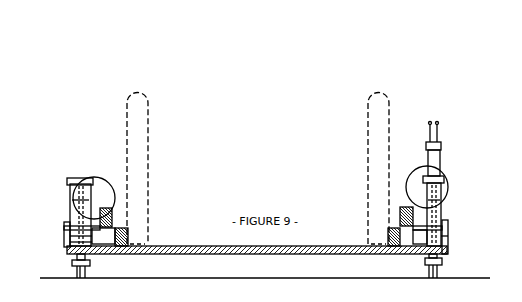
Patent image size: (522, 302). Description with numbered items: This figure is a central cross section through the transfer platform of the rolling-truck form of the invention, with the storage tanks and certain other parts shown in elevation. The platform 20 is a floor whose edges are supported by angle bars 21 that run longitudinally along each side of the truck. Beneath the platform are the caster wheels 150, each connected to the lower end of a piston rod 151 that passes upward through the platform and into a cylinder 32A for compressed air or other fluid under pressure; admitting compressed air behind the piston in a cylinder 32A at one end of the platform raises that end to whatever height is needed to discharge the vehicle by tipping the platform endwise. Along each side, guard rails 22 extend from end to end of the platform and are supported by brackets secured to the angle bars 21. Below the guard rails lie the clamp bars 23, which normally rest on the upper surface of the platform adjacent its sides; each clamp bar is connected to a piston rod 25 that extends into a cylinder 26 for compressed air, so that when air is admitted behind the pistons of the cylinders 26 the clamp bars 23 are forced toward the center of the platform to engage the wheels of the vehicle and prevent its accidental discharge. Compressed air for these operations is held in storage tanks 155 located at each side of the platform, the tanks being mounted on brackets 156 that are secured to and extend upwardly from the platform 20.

The platform 20 is at (306, 249).
The angle bars 21 is at (67, 239).
The guard rails 22 is at (111, 211).
The clamp bars 23 is at (127, 240).
The piston rods 25 is at (99, 246).
The cylinders 26 is at (92, 249).
The cylinders 32A is at (89, 174).
The caster wheels 150 is at (73, 264).
The piston rods 151 is at (69, 218).
The storage tanks 155 is at (102, 183).
The brackets 156 is at (445, 203).